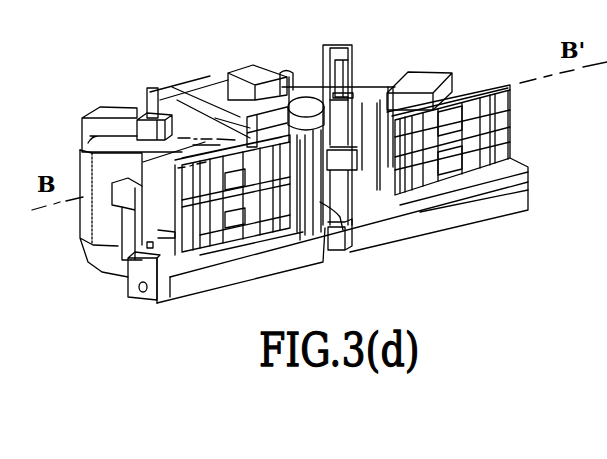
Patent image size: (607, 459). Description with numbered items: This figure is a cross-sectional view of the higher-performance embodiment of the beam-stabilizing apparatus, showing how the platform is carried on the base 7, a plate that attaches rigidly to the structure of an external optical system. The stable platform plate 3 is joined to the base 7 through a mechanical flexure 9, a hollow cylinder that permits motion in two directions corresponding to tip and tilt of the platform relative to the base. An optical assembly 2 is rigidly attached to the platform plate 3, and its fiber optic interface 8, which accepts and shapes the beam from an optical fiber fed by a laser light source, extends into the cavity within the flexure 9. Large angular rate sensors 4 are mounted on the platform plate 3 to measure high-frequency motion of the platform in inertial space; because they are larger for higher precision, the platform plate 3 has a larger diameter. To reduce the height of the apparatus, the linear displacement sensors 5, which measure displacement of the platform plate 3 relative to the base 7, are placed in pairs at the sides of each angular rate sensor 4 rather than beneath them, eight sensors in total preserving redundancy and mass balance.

The optical assembly 2 is at (318, 95).
The platform plate 3 is at (170, 96).
The angular rate sensors 4 is at (150, 218).
The linear displacement sensors 5 is at (87, 218).
The base 7 is at (457, 215).
The fiber optic interface 8 is at (350, 88).
The mechanical flexure 9 is at (345, 250).